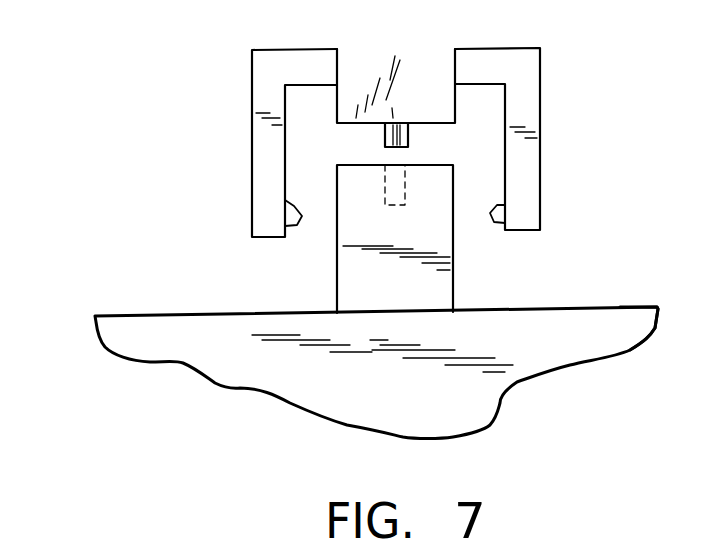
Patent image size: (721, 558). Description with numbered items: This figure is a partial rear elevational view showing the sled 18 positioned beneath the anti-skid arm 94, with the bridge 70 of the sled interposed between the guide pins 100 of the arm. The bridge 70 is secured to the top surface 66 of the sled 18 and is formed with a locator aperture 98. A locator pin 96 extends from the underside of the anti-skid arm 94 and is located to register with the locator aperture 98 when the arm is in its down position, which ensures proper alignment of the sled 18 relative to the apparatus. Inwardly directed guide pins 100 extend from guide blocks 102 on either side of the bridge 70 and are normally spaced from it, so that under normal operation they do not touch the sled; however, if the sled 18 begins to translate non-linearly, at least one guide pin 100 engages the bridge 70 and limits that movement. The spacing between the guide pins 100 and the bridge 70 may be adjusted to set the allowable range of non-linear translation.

The sled 18 is at (99, 315).
The top surface 66 is at (623, 306).
The bridge 70 is at (337, 248).
The anti-skid arm 94 is at (428, 47).
The locator pin 96 is at (408, 147).
The locator aperture 98 is at (405, 205).
The guide pins 100 is at (287, 203).
The guide blocks 102 is at (252, 61).